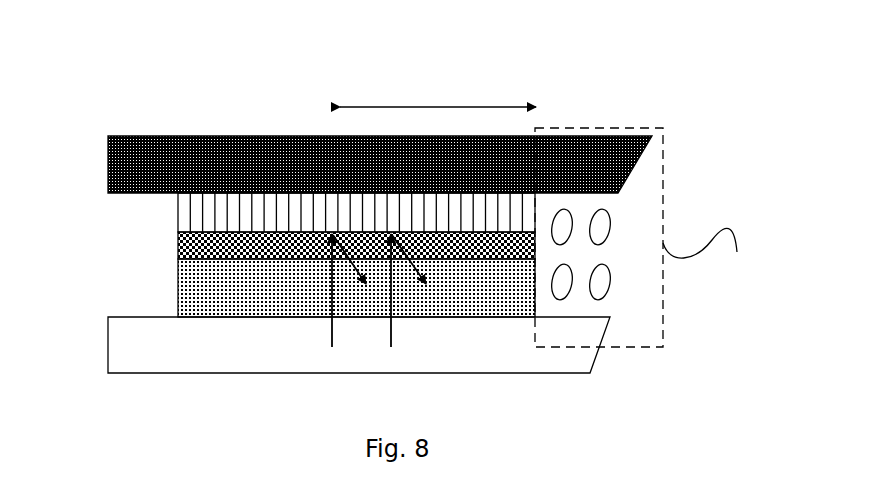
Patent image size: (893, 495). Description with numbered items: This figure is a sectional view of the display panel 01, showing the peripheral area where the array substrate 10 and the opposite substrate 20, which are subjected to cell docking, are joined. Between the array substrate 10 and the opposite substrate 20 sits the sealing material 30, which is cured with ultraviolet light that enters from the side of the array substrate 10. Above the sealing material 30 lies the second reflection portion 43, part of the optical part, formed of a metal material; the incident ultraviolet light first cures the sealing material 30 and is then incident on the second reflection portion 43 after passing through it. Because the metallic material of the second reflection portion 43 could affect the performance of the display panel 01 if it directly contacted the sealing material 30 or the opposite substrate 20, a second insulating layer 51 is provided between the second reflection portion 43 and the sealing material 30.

The display panel 01 is at (403, 216).
The opposite substrate 20 is at (597, 163).
The second reflection portion 43 is at (192, 226).
The second insulating layer 51 is at (193, 246).
The sealing material 30 is at (200, 300).
The array substrate 10 is at (567, 362).